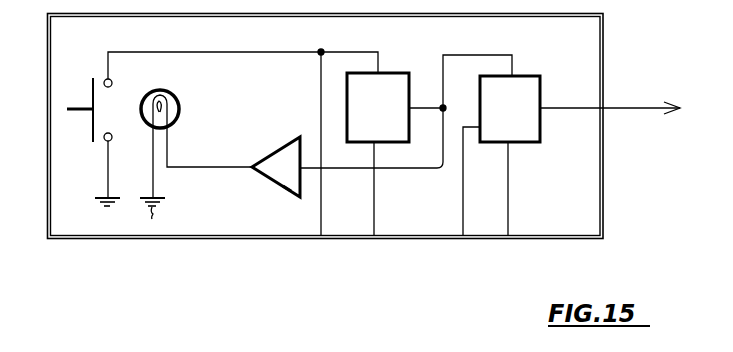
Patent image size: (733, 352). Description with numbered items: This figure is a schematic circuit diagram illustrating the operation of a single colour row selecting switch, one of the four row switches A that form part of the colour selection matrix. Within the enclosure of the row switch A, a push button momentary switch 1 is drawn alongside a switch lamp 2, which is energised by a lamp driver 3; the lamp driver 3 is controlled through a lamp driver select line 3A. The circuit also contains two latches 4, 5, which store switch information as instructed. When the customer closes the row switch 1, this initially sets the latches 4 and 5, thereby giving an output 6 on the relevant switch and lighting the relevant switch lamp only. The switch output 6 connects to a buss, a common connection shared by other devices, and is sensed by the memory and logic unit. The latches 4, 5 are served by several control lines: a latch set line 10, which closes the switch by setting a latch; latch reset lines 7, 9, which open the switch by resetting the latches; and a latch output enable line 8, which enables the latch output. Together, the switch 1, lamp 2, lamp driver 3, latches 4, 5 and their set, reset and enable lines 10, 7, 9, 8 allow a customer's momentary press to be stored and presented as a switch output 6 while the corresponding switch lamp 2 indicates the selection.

The row switch A is at (93, 15).
The push button momentary switch 1 is at (93, 142).
The switch lamp 2 is at (196, 154).
The lamp driver 3 is at (347, 152).
The lamp driver select line 3A is at (283, 186).
The latch 4 is at (395, 107).
The latch 5 is at (510, 109).
The switch output 6 is at (610, 96).
The latch reset line 7 is at (508, 235).
The latch output enable line 8 is at (463, 235).
The latch reset line 9 is at (374, 235).
The latch set line 10 is at (321, 235).